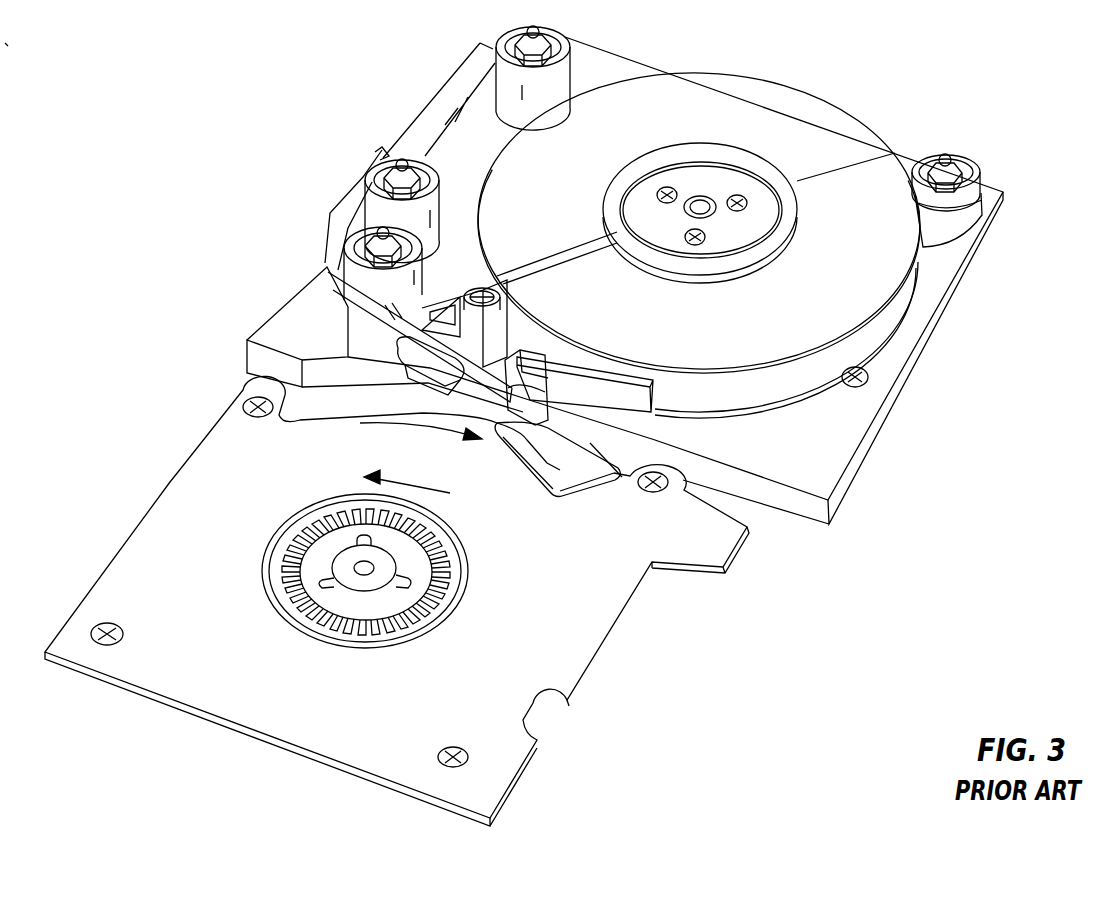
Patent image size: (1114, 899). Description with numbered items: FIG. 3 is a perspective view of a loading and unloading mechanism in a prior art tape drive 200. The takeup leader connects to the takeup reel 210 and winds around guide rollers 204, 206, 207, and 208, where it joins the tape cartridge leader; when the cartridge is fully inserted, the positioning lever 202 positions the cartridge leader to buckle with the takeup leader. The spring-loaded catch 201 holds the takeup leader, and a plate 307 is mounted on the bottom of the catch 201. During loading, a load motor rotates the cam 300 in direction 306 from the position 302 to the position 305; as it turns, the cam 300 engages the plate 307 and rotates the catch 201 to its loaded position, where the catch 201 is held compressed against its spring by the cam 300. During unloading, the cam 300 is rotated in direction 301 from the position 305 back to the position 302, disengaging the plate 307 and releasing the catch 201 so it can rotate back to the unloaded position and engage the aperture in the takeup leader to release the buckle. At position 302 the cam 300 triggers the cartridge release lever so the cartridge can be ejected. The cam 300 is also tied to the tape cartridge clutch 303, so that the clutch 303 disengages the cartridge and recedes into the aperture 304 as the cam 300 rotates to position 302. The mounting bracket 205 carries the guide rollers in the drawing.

The tape drive 200 is at (625, 280).
The catch 201 is at (498, 322).
The positioning lever 202 is at (628, 413).
The guide roller 204 is at (347, 250).
The mounting bracket arm 205 is at (418, 222).
The guide roller 206 is at (377, 157).
The guide roller 207 is at (512, 38).
The guide roller 208 is at (945, 157).
The takeup reel 210 is at (842, 120).
The cam 300 is at (560, 460).
The direction 301 is at (437, 432).
The position 302 is at (588, 495).
The tape cartridge clutch 303 is at (448, 593).
The aperture 304 is at (470, 583).
The position 305 is at (278, 422).
The direction 306 is at (450, 493).
The plate 307 is at (422, 362).